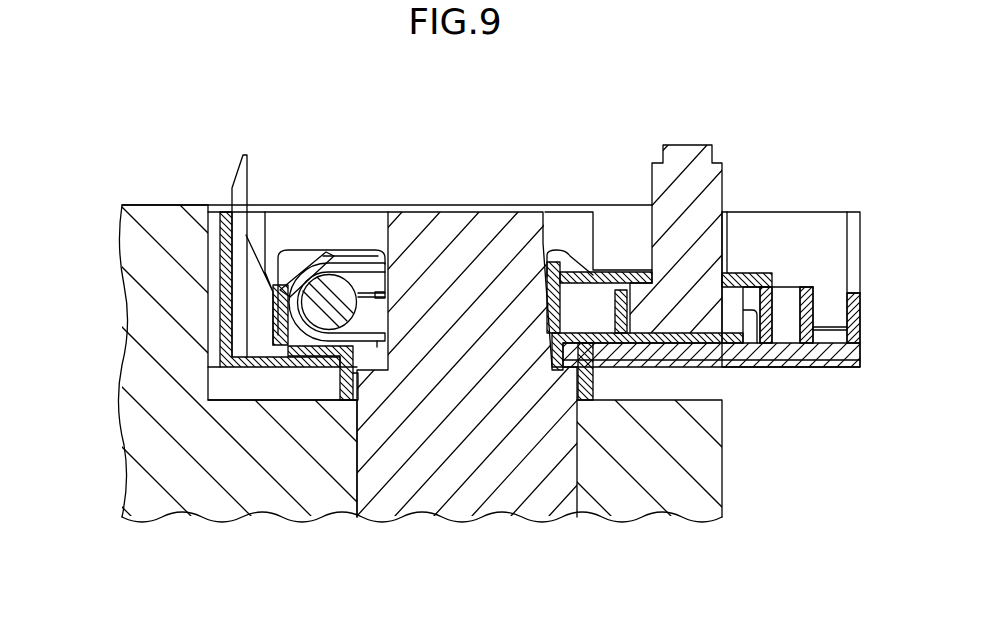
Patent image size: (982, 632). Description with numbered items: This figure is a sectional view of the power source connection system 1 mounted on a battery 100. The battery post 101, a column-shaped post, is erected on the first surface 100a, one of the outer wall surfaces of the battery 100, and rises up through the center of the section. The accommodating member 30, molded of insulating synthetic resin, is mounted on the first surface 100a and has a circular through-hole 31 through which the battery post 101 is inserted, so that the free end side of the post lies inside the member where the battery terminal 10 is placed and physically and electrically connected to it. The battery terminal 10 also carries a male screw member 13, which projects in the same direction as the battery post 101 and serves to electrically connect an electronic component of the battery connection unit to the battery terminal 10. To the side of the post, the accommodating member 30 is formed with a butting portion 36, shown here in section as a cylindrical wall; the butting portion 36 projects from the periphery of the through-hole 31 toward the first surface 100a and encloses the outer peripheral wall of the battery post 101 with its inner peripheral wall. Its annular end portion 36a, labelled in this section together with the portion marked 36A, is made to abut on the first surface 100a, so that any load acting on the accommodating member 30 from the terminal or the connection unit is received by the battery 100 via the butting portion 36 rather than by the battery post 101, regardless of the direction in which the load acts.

The power source connection system 1 is at (614, 117).
The battery terminal 10 is at (353, 253).
The male screw member 13 is at (724, 187).
The accommodating member 30 is at (813, 212).
The through-hole 31 is at (362, 352).
The butting portion 36 is at (703, 310).
The metal fitting plate portion 36A is at (340, 375).
The annular end portion 36a is at (587, 400).
The battery 100 is at (147, 186).
The first surface 100a is at (232, 397).
The battery post 101 is at (462, 210).